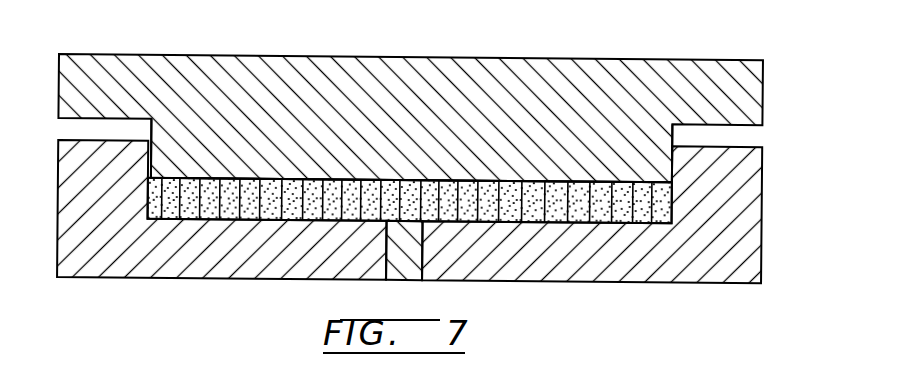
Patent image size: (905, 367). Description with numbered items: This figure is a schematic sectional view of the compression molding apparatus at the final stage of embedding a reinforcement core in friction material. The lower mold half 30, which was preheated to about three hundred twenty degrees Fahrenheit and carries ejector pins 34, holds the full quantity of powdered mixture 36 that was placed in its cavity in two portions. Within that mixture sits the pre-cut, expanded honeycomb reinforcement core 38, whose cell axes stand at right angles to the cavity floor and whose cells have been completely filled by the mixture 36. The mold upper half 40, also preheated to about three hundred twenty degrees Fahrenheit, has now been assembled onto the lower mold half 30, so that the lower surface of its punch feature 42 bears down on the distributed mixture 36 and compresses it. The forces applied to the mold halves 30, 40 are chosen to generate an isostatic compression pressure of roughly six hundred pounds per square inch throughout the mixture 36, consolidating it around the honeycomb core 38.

The lower mold half 30 is at (142, 272).
The ejector pins 34 is at (408, 266).
The powdered mixture 36 is at (510, 205).
The honeycomb reinforcement core 38 is at (260, 203).
The mold upper half 40 is at (125, 54).
The punch feature 42 is at (150, 153).